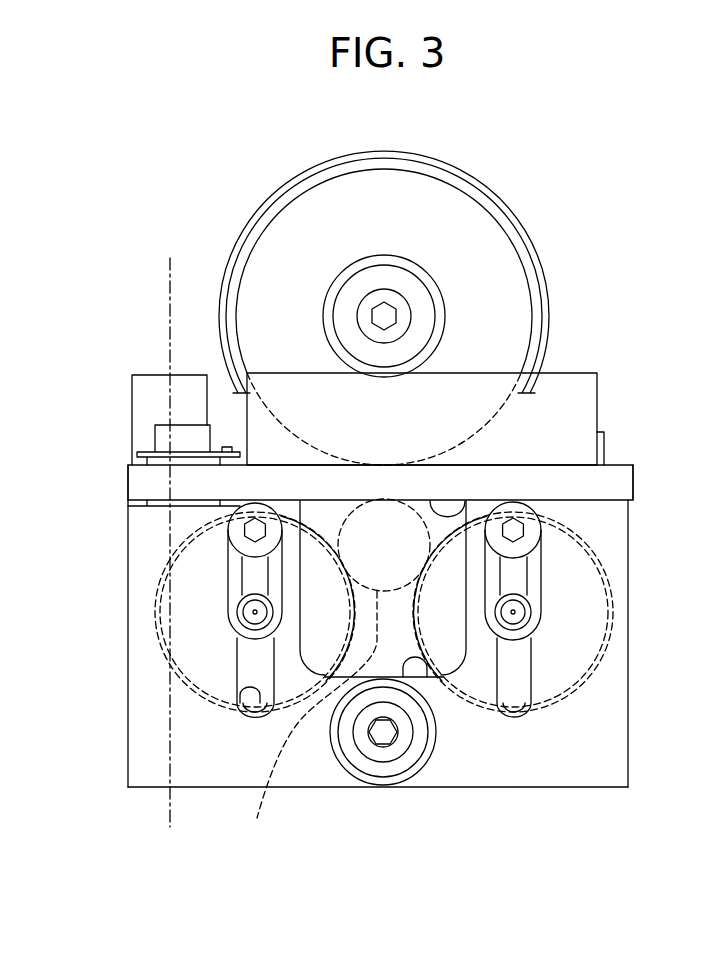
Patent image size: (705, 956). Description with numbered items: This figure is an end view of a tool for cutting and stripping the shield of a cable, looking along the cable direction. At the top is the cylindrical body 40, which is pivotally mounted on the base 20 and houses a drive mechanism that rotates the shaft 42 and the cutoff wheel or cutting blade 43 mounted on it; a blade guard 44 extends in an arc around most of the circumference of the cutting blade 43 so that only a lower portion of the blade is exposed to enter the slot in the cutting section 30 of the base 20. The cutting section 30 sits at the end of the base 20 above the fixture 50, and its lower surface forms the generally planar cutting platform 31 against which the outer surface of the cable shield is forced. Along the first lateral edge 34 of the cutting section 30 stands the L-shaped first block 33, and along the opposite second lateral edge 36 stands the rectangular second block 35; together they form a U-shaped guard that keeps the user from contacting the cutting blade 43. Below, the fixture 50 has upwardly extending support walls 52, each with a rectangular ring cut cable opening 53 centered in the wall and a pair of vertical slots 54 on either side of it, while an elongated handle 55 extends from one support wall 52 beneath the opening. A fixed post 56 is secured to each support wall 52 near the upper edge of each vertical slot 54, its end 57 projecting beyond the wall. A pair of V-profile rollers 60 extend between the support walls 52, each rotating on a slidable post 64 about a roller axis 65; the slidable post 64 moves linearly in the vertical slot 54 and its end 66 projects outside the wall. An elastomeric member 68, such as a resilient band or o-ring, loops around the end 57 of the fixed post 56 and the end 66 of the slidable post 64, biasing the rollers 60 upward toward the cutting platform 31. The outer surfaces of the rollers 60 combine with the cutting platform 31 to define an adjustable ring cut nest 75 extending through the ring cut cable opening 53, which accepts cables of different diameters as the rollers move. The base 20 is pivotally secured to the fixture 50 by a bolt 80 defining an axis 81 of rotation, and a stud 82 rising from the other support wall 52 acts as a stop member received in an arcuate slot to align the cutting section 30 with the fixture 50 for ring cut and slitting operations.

The base 20 is at (626, 445).
The cutting section 30 is at (603, 487).
The cutting platform 31 is at (453, 507).
The first block 33 is at (555, 393).
The first lateral edge 34 is at (632, 483).
The second block 35 is at (148, 388).
The second lateral edge 36 is at (128, 483).
The body 40 is at (563, 269).
The shaft 42 is at (383, 316).
The cutting blade 43 is at (442, 207).
The blade guard 44 is at (338, 160).
The fixture 50 is at (647, 766).
The support wall 52 is at (503, 767).
The ring cut cable opening 53 is at (433, 660).
The vertical slot 54 is at (260, 715).
The handle 55 is at (363, 763).
The fixed post 56 is at (232, 520).
The end of fixed post 57 is at (235, 533).
The roller 60 is at (215, 703).
The slidable post 64 is at (237, 607).
The roller axis 65 is at (248, 630).
The end of slidable post 66 is at (257, 613).
The elastomeric member 68 is at (237, 568).
The ring cut nest 75 is at (308, 718).
The bolt 80 is at (167, 433).
The axis 81 is at (170, 293).
The stud 82 is at (603, 443).